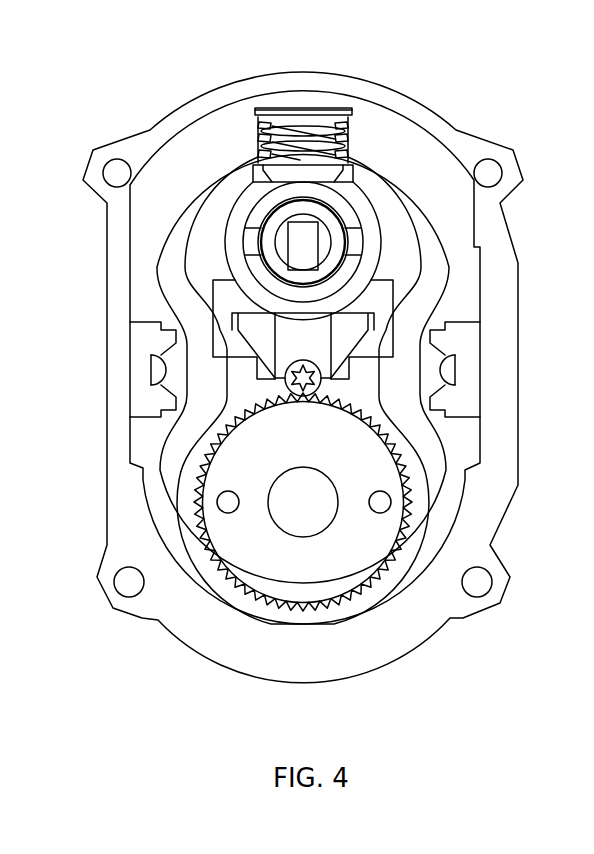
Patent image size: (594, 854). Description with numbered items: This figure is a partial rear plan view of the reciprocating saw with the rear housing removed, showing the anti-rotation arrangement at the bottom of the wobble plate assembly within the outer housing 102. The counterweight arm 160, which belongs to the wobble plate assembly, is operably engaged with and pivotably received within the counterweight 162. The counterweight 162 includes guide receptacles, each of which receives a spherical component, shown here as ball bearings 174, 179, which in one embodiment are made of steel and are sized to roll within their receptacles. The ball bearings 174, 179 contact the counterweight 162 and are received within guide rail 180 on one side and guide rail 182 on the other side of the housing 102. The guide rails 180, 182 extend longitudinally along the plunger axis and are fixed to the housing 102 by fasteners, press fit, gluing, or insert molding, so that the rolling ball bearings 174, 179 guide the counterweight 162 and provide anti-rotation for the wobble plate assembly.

The outer housing 102 is at (301, 71).
The counterweight arm 160 is at (283, 608).
The counterweight 162 is at (440, 243).
The ball bearing 174 is at (150, 372).
The ball bearing 179 is at (448, 359).
The guide rail 180 is at (143, 390).
The guide rail 182 is at (478, 390).